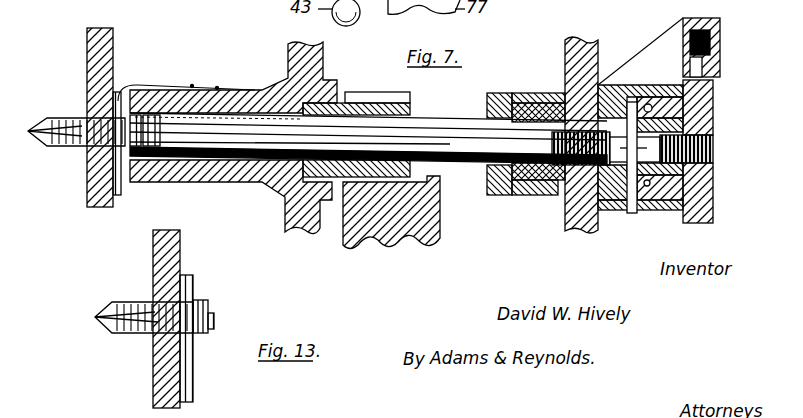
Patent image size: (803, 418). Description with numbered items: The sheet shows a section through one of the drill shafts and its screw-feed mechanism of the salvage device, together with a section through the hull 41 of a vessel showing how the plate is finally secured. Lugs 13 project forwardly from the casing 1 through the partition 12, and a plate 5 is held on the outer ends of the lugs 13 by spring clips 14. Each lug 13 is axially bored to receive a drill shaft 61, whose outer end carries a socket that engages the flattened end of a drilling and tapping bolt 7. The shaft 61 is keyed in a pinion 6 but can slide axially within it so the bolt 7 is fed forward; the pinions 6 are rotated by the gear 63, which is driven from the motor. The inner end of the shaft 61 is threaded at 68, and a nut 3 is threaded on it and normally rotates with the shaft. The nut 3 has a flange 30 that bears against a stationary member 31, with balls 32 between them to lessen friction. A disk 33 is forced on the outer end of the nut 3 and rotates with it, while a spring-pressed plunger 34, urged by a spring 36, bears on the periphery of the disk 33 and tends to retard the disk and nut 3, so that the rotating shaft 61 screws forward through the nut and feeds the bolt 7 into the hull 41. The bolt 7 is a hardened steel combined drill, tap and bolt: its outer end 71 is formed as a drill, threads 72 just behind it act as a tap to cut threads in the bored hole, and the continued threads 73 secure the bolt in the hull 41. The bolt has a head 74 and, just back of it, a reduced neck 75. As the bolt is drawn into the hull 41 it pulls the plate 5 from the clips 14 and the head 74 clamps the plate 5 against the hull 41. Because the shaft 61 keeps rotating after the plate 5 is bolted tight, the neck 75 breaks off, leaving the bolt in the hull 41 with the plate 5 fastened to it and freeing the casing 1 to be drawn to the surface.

In FIG. 7, the casing 1 is at (293, 220).
In FIG. 7, the nut 3 is at (660, 106).
In FIG. 7, the plate 5 is at (116, 190).
In FIG. 13, the plate 5 is at (193, 282).
In FIG. 7, the pinion 6 is at (378, 100).
In FIG. 7, the drilling and tapping bolt 7 is at (75, 152).
In FIG. 7, the partition 12 is at (567, 228).
In FIG. 7, the lug 13 is at (246, 98).
In FIG. 7, the spring clip 14 is at (140, 88).
In FIG. 7, the flange 30 is at (647, 188).
In FIG. 7, the stationary member 31 is at (637, 202).
In FIG. 7, the balls 32 is at (633, 105).
In FIG. 7, the disk 33 is at (705, 113).
In FIG. 7, the spring-pressed plunger 34 is at (703, 68).
In FIG. 7, the spring 36 is at (708, 44).
In FIG. 7, the wall 41 is at (103, 60).
In FIG. 13, the wall 41 is at (154, 248).
In FIG. 7, the drill shaft 61 is at (452, 128).
In FIG. 7, the gear 63 is at (402, 231).
In FIG. 7, the threaded portion of drill shaft 68 is at (577, 160).
In FIG. 13, the drill end 71 is at (102, 313).
In FIG. 13, the tap threads 72 is at (133, 303).
In FIG. 13, the securing threads 73 is at (157, 333).
In FIG. 7, the head 74 is at (132, 117).
In FIG. 13, the head 74 is at (208, 307).
In FIG. 7, the reduced neck 75 is at (149, 150).
In FIG. 13, the reduced neck 75 is at (212, 328).